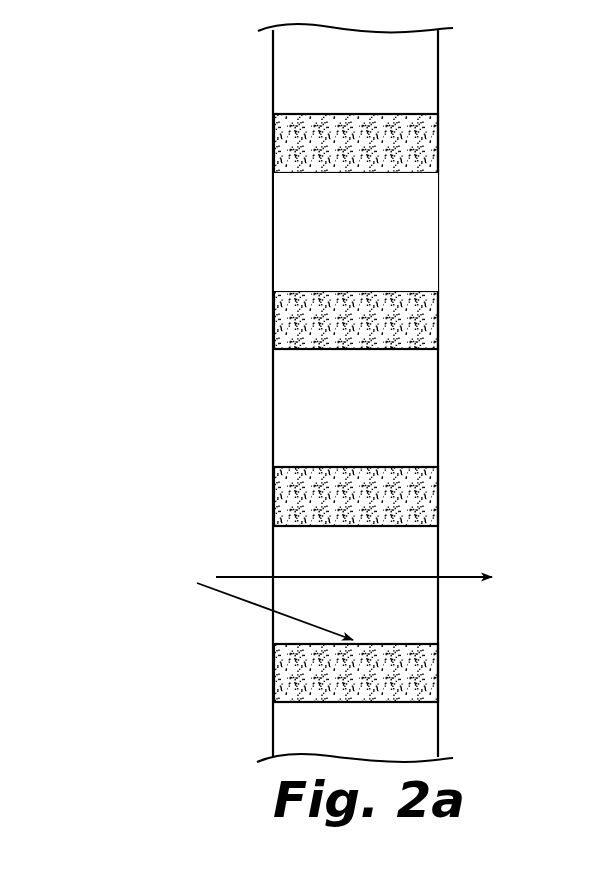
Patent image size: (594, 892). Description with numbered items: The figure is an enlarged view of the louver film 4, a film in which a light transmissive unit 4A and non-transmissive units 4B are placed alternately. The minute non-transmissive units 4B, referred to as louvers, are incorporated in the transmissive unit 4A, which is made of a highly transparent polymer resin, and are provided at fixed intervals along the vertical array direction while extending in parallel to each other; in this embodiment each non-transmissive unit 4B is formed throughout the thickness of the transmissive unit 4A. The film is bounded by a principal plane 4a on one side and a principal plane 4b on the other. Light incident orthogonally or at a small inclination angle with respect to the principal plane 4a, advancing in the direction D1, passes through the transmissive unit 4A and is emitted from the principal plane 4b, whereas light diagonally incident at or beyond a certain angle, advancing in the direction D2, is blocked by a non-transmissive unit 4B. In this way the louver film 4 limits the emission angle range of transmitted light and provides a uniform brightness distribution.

The louver film 4 is at (326, 393).
The non-transmissive unit 4B is at (290, 143).
The transmissive unit 4A is at (290, 227).
The principal plane 4a is at (273, 412).
The principal plane 4b is at (440, 410).
The direction of transmitted light D1 is at (236, 577).
The direction of blocked light D2 is at (226, 594).